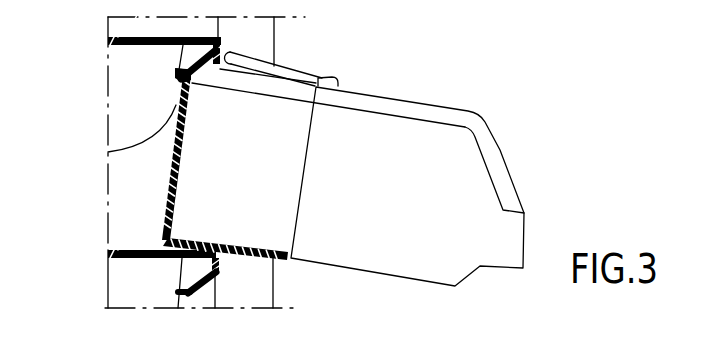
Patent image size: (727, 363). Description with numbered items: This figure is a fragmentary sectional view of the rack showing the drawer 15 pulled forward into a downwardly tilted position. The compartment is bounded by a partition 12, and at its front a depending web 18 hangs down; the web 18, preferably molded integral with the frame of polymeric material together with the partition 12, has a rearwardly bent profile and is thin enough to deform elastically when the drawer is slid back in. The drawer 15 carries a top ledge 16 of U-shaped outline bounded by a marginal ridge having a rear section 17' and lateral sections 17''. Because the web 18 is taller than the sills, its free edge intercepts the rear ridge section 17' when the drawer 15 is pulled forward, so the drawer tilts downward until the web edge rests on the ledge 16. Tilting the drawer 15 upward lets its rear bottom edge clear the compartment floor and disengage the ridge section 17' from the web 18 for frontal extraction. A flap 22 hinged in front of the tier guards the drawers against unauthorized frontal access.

The partition 12 is at (107, 253).
The drawer 15 is at (360, 280).
The top ledge 16 is at (248, 92).
The rear section of marginal ridge 17' is at (111, 80).
The lateral sections of marginal ridge 17'' is at (349, 67).
The depending web 18 is at (190, 72).
The flap 22 is at (292, 72).